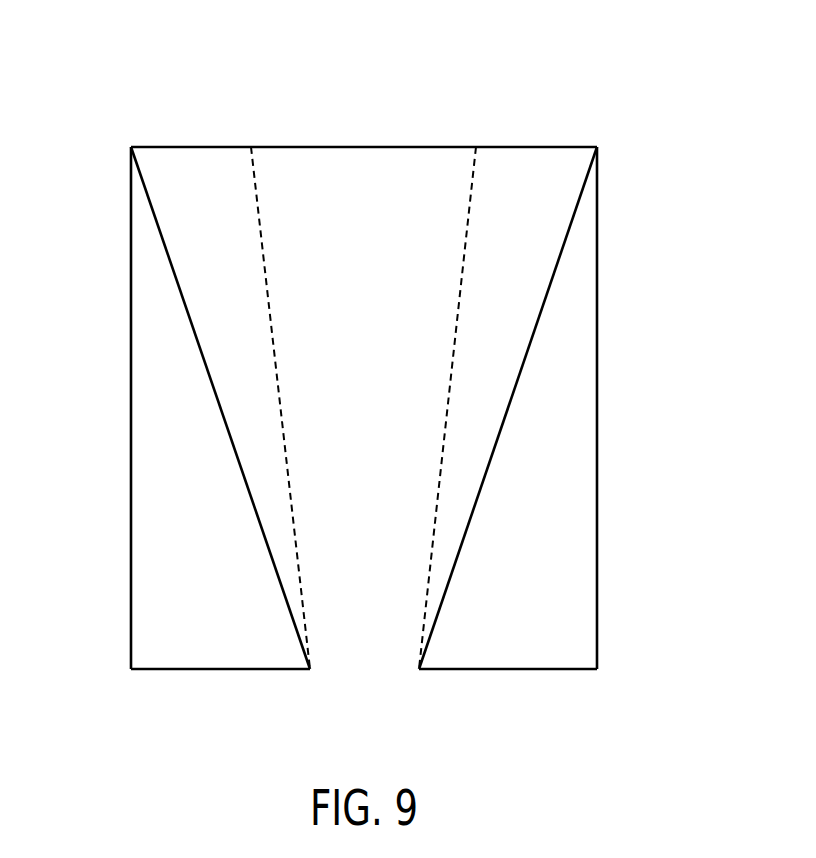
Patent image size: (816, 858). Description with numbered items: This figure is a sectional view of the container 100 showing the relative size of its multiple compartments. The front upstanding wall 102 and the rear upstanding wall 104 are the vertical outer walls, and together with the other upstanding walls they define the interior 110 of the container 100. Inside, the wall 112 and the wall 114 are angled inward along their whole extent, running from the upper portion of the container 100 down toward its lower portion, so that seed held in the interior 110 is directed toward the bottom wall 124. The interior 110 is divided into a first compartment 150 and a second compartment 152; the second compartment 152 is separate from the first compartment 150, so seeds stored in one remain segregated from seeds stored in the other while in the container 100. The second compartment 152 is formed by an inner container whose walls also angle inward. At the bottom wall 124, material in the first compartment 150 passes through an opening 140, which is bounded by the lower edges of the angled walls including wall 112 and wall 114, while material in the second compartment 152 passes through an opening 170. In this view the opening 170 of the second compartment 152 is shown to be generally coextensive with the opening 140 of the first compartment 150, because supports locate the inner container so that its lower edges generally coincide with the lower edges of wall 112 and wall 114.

The container 100 is at (618, 111).
The interior 110 is at (543, 177).
The front upstanding wall 102 is at (131, 408).
The rear upstanding wall 104 is at (597, 417).
The wall 112 is at (219, 403).
The wall 114 is at (510, 403).
The first compartment 150 is at (233, 267).
The second compartment 152 is at (380, 284).
The bottom wall 124 is at (520, 676).
The opening 140 is at (269, 711).
The opening 170 is at (362, 677).